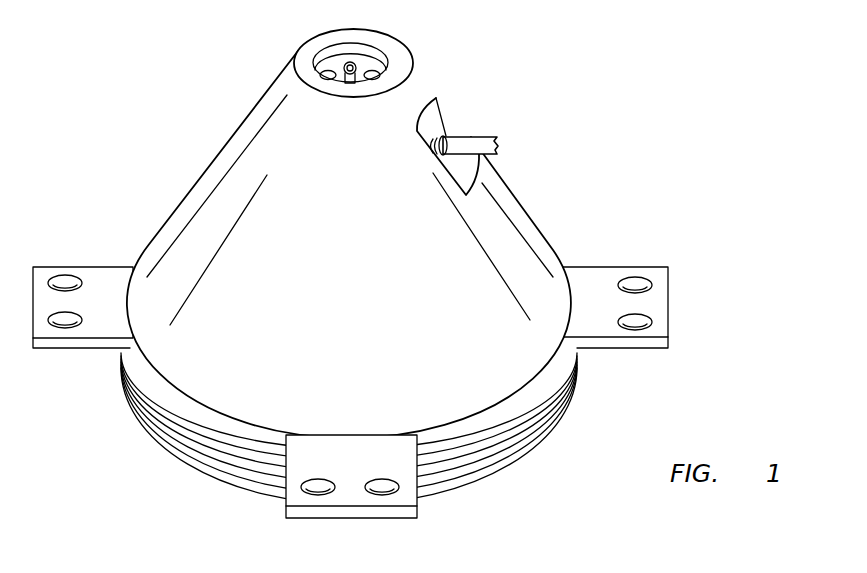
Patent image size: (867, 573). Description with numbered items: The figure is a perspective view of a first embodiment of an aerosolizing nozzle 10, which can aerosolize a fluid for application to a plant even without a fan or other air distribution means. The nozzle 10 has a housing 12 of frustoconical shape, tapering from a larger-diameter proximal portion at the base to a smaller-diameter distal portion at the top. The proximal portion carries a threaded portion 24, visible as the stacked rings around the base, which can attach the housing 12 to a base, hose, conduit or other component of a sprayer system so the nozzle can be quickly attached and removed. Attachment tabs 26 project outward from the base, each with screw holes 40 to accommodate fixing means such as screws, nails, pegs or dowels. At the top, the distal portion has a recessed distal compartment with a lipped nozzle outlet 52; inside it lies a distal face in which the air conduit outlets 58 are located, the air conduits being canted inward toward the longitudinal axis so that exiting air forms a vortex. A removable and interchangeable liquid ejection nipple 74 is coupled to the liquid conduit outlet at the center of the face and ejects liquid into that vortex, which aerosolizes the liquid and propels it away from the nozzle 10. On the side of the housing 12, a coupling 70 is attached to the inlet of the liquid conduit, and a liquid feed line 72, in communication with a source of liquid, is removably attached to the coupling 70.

The aerosolizing nozzle 10 is at (613, 129).
The nozzle housing 12 is at (500, 240).
The threaded portion 24 is at (180, 437).
The attachment tab 26 is at (668, 298).
The screw hole 40 is at (635, 277).
The lipped nozzle outlet 52 is at (370, 50).
The air conduit outlet 58 is at (327, 73).
The coupling 70 is at (448, 132).
The liquid feed line 72 is at (483, 142).
The liquid ejection nipple 74 is at (349, 66).